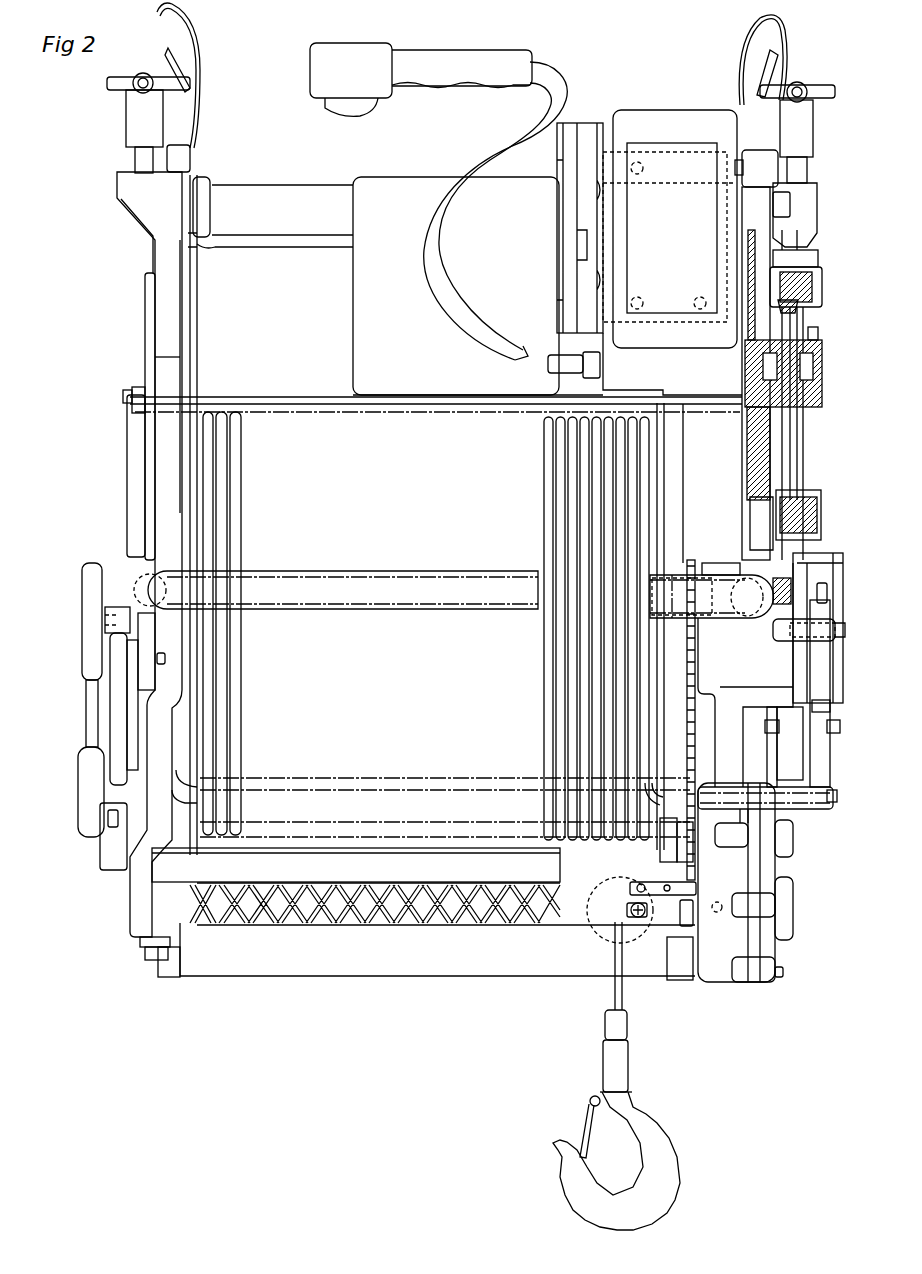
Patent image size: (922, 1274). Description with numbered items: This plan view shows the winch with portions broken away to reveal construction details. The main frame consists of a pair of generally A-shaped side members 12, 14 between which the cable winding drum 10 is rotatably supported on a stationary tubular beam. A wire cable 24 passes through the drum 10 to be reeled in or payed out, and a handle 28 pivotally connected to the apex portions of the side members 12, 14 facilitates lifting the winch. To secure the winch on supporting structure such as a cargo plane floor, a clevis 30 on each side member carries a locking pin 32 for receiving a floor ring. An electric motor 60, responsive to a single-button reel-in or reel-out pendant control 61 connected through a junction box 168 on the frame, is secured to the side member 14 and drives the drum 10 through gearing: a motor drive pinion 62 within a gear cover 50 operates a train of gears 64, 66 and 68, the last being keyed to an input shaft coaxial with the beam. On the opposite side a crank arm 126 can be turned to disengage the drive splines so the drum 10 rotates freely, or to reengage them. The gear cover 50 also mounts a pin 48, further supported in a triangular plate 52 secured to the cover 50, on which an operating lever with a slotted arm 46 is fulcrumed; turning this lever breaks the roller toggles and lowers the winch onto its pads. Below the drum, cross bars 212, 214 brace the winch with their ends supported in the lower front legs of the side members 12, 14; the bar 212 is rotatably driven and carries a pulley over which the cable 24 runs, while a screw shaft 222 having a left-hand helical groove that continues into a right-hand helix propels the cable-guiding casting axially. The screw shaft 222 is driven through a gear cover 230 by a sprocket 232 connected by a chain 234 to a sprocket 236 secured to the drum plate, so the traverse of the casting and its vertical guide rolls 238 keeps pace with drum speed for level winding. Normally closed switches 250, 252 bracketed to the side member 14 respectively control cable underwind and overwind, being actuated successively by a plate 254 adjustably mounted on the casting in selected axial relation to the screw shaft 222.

The cable winding drum 10 is at (270, 405).
The side member 12 is at (160, 537).
The side member 14 is at (757, 450).
The wire cable 24 is at (605, 996).
The handle 28 is at (364, 574).
The clevis 30 is at (135, 112).
The locking pin 32 is at (130, 86).
The slotted arm 46 is at (830, 772).
The pin 48 is at (843, 630).
The gear cover 50 is at (815, 392).
The triangular plate 52 is at (842, 592).
The electric motor 60 is at (385, 178).
The pendant control 61 is at (345, 110).
The motor drive pinion 62 is at (795, 312).
The gear 64 is at (790, 366).
The gear 66 is at (795, 472).
The gear 68 is at (775, 590).
The crank arm 126 is at (90, 838).
The junction box 168 is at (650, 112).
The cross bar 212 is at (361, 850).
The cross bar 214 is at (275, 976).
The screw shaft 222 is at (300, 926).
The gear cover 230 is at (795, 912).
The sprocket 232 is at (681, 845).
The chain 234 is at (700, 722).
The sprocket 236 is at (672, 652).
The vertical guide roll 238 is at (592, 940).
The switch 250 is at (686, 920).
The switch 252 is at (696, 889).
The plate 254 is at (565, 921).